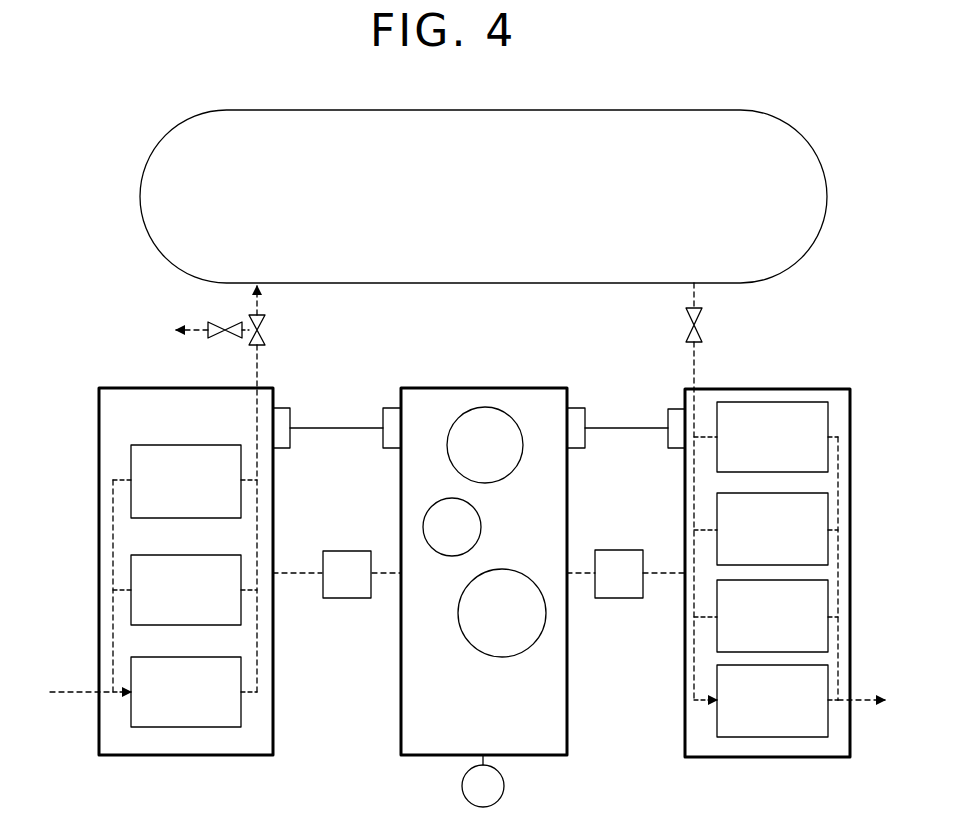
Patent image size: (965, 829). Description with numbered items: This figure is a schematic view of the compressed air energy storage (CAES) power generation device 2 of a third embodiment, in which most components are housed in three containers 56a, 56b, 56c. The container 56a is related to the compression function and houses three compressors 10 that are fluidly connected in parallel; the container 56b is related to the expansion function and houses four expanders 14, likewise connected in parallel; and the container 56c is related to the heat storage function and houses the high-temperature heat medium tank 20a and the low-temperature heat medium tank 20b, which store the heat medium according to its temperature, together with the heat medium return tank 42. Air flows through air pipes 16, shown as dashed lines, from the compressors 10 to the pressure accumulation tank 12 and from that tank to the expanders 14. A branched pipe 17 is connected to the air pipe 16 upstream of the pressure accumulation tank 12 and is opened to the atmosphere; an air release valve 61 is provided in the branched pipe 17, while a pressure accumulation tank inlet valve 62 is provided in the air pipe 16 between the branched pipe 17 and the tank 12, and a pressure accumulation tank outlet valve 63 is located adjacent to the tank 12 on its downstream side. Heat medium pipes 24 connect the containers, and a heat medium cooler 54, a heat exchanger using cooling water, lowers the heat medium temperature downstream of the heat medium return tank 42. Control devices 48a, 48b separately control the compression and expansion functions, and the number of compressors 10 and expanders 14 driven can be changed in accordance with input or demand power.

The CAES power generation device 2 is at (868, 322).
The compressor 10 is at (131, 445).
The pressure accumulation tank 12 is at (152, 243).
The expander 14 is at (828, 402).
The air pipe 16 is at (262, 365).
The branched pipe 17 is at (205, 328).
The high-temperature heat medium tank 20a is at (516, 408).
The low-temperature heat medium tank 20b is at (478, 513).
The heat medium pipe 24 is at (345, 430).
The heat medium return tank 42 is at (458, 617).
The control device 48a is at (347, 598).
The control device 48b is at (620, 598).
The heat medium cooler 54 is at (504, 782).
The container 56a is at (130, 387).
The container 56b is at (765, 388).
The container 56c is at (475, 388).
The air release valve 61 is at (222, 343).
The pressure accumulation tank inlet valve 62 is at (265, 330).
The pressure accumulation tank outlet valve 63 is at (683, 325).